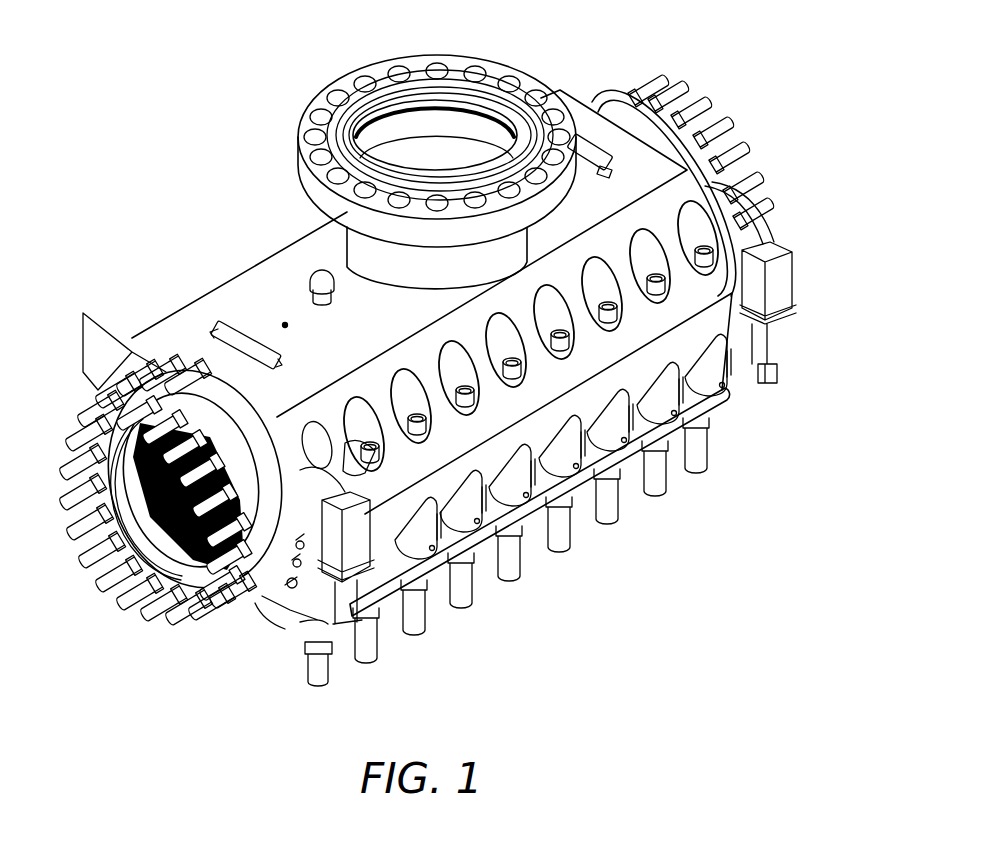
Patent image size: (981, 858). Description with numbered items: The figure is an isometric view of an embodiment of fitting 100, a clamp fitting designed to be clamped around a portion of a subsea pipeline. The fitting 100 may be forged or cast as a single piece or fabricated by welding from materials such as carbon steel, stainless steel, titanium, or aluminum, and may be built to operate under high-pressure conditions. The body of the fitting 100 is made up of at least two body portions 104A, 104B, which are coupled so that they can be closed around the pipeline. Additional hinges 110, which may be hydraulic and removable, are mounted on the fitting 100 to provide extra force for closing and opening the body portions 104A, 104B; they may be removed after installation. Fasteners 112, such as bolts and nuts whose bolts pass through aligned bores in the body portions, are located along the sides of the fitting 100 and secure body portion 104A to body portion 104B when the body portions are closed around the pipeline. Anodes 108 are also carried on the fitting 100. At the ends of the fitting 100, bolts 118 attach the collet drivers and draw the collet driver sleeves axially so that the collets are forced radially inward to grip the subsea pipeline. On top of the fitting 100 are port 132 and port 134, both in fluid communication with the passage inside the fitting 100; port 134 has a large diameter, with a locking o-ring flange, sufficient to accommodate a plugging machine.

The fitting 100 is at (170, 135).
The body portion 104A is at (127, 330).
The body portion 104B is at (255, 600).
The anodes 108 is at (232, 326).
The hinges 110 is at (293, 597).
The fasteners 112 is at (563, 543).
The bolts 118 is at (143, 613).
The port 132 is at (318, 270).
The port 134 is at (362, 68).